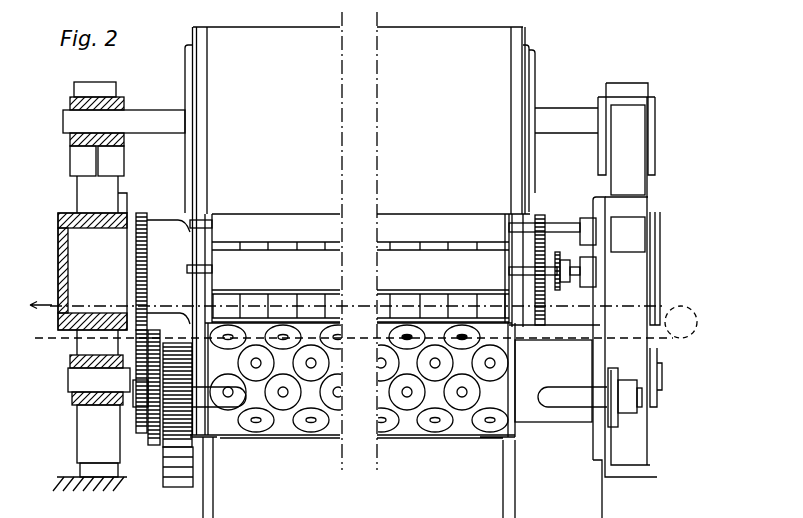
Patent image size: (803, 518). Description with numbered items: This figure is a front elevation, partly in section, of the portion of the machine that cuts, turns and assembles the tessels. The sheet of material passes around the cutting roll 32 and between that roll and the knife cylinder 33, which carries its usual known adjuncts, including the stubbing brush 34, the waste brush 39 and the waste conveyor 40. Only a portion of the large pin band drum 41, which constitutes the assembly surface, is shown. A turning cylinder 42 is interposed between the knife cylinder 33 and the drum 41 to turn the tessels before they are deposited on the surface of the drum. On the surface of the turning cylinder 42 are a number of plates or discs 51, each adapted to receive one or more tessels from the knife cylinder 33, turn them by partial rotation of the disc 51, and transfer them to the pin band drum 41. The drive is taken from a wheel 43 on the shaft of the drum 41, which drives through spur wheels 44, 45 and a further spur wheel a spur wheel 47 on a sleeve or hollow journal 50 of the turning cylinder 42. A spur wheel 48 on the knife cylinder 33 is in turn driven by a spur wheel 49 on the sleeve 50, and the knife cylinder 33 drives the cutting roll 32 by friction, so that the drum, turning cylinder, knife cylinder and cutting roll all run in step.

The cutting roll 32 is at (360, 241).
The knife cylinder 33 is at (402, 302).
The stubbing brush 34 is at (367, 268).
The waste brush 39 is at (360, 279).
The waste conveyor 40 is at (42, 309).
The pin band drum 41 is at (304, 420).
The turning cylinder 42 is at (460, 430).
The wheel 43 is at (177, 468).
The spur wheel 44 is at (190, 445).
The spur wheel 45 is at (153, 443).
The spur wheel 47 is at (138, 318).
The spur wheel 48 is at (142, 213).
The spur wheel 49 is at (143, 430).
The sleeve 50 is at (193, 337).
The discs 51 is at (383, 422).